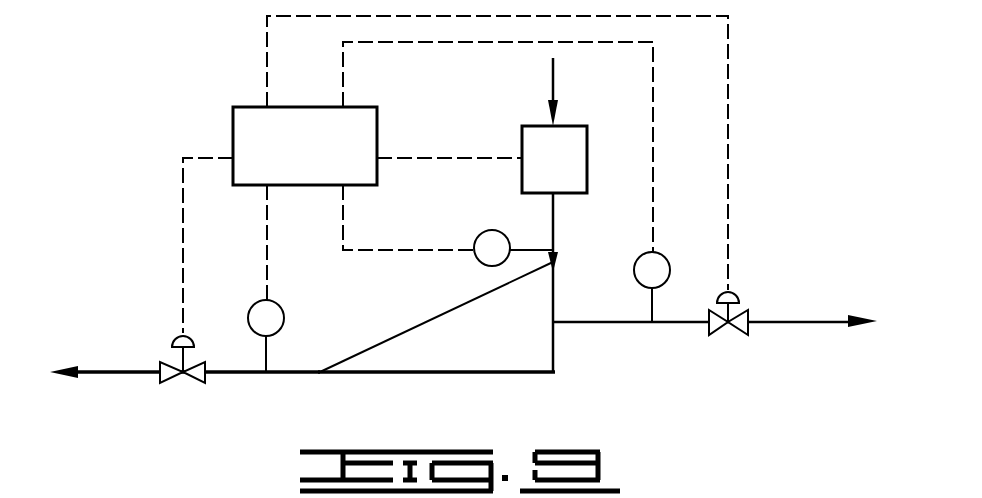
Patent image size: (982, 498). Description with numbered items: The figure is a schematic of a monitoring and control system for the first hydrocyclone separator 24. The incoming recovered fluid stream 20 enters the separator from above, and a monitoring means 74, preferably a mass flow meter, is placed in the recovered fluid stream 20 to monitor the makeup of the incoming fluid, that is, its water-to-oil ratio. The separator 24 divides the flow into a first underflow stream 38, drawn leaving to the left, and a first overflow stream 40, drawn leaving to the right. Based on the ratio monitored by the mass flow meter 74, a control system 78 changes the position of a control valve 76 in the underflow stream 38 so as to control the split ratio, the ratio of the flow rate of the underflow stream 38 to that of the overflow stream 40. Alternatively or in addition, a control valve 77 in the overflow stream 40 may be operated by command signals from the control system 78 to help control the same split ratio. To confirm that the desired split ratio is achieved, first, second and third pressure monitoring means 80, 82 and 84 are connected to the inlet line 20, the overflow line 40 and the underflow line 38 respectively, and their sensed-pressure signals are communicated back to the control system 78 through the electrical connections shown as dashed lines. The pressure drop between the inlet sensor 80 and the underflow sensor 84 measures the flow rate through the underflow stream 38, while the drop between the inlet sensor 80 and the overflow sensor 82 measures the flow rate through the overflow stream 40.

The recovered fluid stream 20 is at (553, 88).
The first hydrocyclone separator 24 is at (556, 358).
The first underflow stream 38 is at (290, 375).
The first overflow stream 40 is at (675, 322).
The monitoring means 74 is at (587, 155).
The control valve 76 is at (197, 380).
The control valve 77 is at (748, 322).
The control system 78 is at (245, 107).
The first pressure monitoring means 80 is at (480, 264).
The second pressure monitoring means 82 is at (665, 258).
The third pressure monitoring means 84 is at (280, 305).